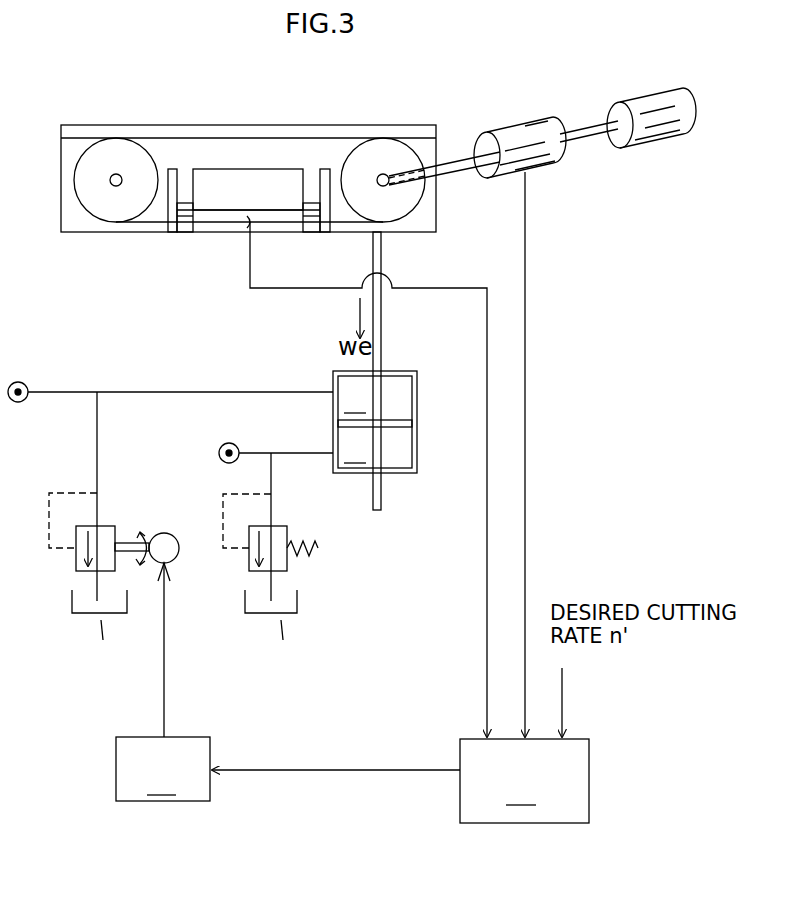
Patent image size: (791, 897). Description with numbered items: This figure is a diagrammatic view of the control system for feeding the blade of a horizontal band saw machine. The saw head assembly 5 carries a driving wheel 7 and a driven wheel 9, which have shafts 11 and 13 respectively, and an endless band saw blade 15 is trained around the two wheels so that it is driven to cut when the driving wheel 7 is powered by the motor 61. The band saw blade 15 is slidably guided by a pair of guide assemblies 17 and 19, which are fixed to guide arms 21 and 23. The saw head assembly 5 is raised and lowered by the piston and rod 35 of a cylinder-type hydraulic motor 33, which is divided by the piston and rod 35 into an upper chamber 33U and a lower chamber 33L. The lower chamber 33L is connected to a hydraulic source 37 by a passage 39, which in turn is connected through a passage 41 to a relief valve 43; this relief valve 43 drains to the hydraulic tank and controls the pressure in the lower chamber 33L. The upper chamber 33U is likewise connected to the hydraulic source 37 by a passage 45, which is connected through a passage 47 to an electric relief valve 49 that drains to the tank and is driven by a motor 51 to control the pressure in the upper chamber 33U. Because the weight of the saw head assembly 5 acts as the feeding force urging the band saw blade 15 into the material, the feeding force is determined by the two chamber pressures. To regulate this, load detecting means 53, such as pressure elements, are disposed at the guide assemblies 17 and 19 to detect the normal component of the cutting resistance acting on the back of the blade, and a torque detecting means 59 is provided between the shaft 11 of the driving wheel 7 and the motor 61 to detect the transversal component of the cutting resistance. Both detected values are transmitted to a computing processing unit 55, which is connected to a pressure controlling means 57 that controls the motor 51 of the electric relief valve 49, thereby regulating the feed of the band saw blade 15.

The saw head assembly 5 is at (225, 124).
The driving wheel 7 is at (403, 142).
The driven wheel 9 is at (96, 140).
The shaft 11 is at (380, 176).
The shaft 13 is at (117, 173).
The band saw blade 15 is at (268, 138).
The guide assembly 17 is at (301, 234).
The guide assembly 19 is at (188, 234).
The guide arm 21 is at (303, 188).
The guide arm 23 is at (180, 188).
The hydraulic motor 33 is at (417, 422).
The upper chamber 33U is at (407, 401).
The lower chamber 33L is at (407, 459).
The piston and rod 35 is at (377, 323).
The hydraulic source 37 is at (20, 381).
The passage 39 is at (306, 452).
The passage 41 is at (272, 483).
The relief valve 43 is at (282, 536).
The passage 45 is at (201, 391).
The passage 47 is at (97, 442).
The electric relief valve 49 is at (108, 531).
The motor 51 is at (168, 531).
The load detecting means 53 is at (182, 215).
The computing processing unit 55 is at (524, 781).
The pressure controlling means 57 is at (163, 769).
The torque detecting means 59 is at (525, 132).
The motor 61 is at (642, 100).